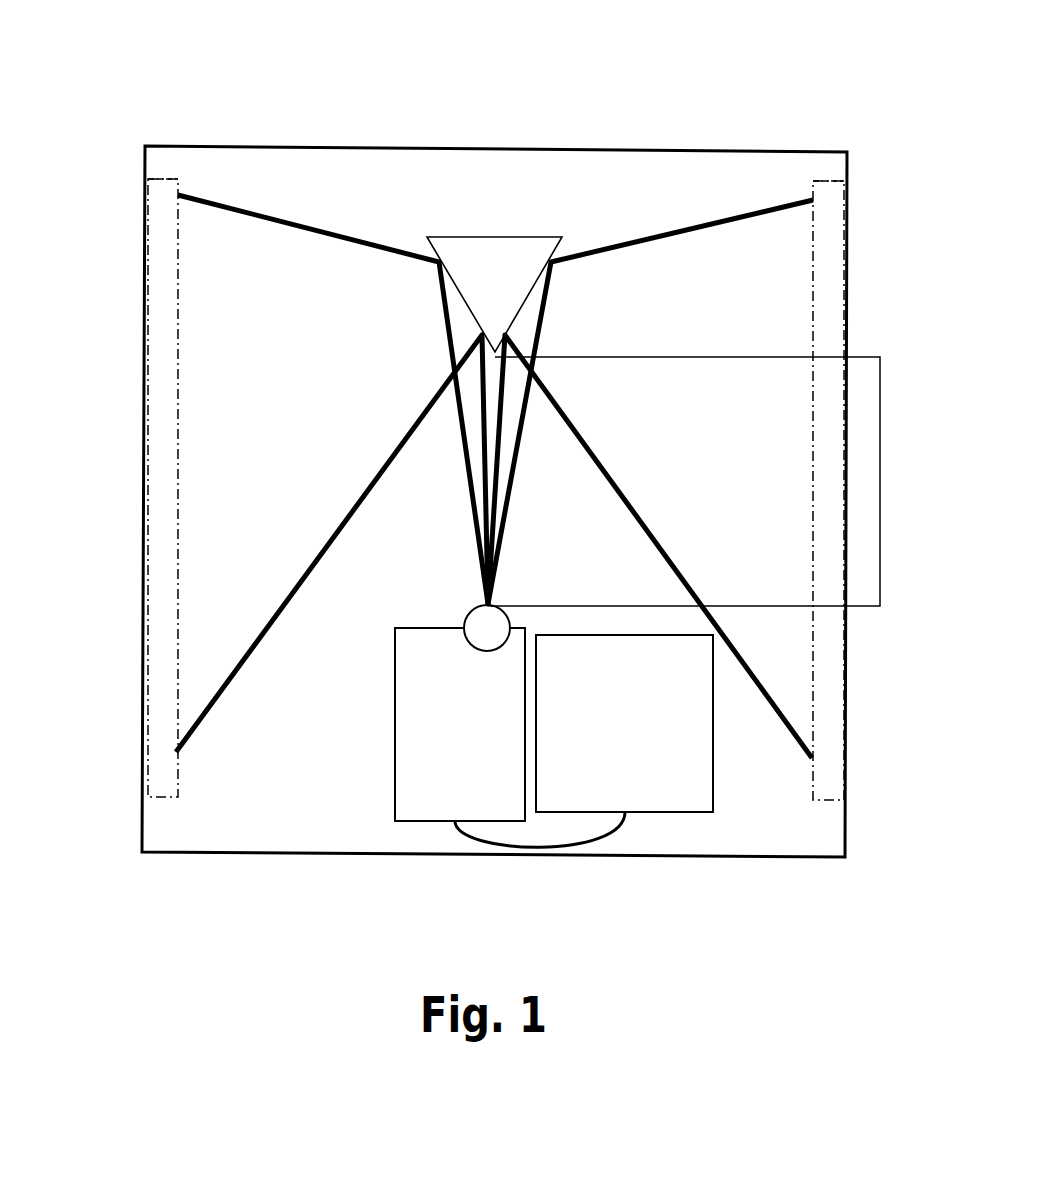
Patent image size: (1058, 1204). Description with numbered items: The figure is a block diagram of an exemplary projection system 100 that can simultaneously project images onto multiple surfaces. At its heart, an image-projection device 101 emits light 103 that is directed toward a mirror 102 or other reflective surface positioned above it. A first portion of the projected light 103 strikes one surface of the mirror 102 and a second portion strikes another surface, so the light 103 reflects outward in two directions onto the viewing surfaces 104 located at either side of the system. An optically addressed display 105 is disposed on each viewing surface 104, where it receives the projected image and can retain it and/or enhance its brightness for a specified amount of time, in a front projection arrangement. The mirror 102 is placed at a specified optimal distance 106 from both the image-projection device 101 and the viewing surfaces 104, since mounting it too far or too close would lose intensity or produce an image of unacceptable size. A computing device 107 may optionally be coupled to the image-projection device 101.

The projection system 100 is at (391, 46).
The image-projection device 101 is at (483, 738).
The mirror 102 is at (513, 275).
The light 103 is at (324, 590).
The viewing surface 104 is at (143, 335).
The optically addressed display 105 is at (163, 180).
The optimal distance 106 is at (880, 488).
The computing device 107 is at (605, 780).